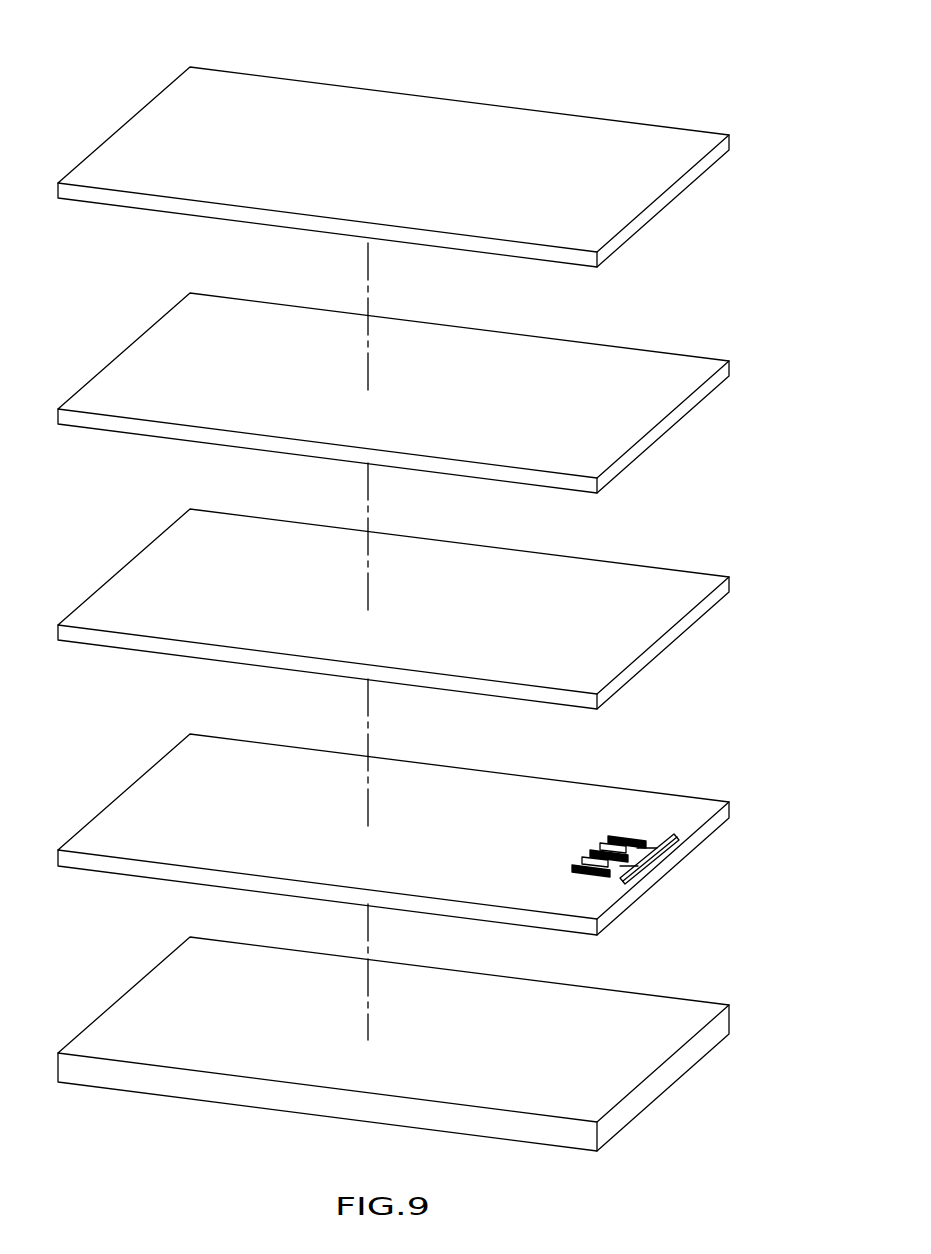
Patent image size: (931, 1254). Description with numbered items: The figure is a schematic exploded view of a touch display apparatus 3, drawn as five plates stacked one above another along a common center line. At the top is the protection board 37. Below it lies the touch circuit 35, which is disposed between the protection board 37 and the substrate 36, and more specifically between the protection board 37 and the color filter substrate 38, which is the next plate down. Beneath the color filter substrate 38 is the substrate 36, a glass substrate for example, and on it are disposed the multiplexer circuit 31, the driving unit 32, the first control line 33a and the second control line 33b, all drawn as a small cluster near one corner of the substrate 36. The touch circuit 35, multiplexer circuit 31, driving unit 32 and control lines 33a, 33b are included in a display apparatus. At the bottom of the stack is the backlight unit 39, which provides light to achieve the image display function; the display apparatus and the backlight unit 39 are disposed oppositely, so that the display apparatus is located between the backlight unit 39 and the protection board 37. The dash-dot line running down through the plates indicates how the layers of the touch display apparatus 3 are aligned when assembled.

The touch display apparatus 3 is at (110, 46).
The protection board 37 is at (549, 123).
The touch circuit 35 is at (686, 426).
The color filter substrate 38 is at (648, 573).
The substrate 36 is at (138, 797).
The multiplexer circuit 31 is at (640, 835).
The driving unit 32 is at (657, 857).
The first control line 33a is at (630, 866).
The second control line 33b is at (648, 846).
The backlight unit 39 is at (138, 1010).